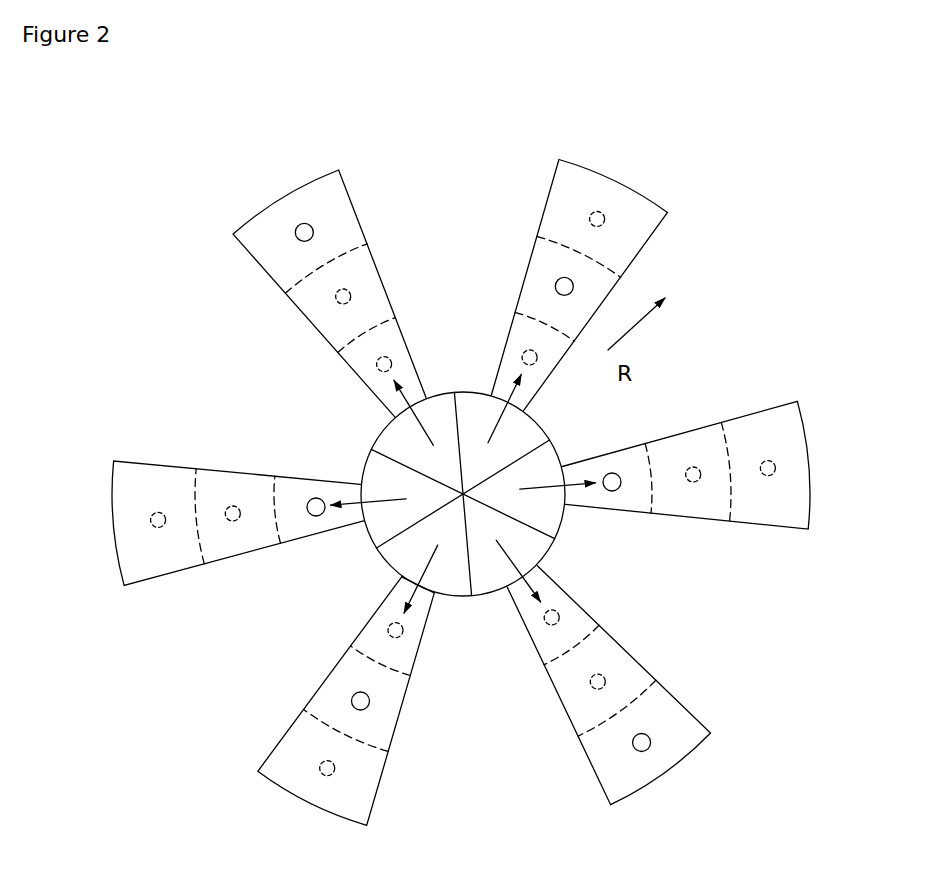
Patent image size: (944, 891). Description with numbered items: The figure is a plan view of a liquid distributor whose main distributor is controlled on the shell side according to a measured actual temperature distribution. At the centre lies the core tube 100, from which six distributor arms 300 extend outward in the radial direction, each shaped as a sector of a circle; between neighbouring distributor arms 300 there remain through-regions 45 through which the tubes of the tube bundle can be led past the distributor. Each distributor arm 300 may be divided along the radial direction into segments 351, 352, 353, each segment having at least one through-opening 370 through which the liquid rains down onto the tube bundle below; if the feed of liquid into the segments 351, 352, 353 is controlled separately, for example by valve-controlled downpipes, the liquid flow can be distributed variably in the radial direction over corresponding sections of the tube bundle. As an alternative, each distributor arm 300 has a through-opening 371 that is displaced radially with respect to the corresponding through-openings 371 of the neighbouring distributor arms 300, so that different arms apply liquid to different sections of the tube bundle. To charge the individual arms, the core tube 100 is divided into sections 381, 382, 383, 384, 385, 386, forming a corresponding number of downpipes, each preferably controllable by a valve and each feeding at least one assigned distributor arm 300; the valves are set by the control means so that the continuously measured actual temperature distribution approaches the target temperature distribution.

The through-region 45 is at (205, 372).
The core tube 100 is at (568, 527).
The distributor arm 300 is at (310, 183).
The segment 351 is at (372, 648).
The segment 352 is at (330, 690).
The segment 353 is at (258, 773).
The through-opening 370 is at (402, 636).
The through-opening 371 is at (312, 229).
The section of the core tube 381 is at (377, 548).
The section of the core tube 382 is at (381, 437).
The section of the core tube 383 is at (472, 415).
The section of the core tube 384 is at (552, 441).
The section of the core tube 385 is at (538, 562).
The section of the core tube 386 is at (453, 578).